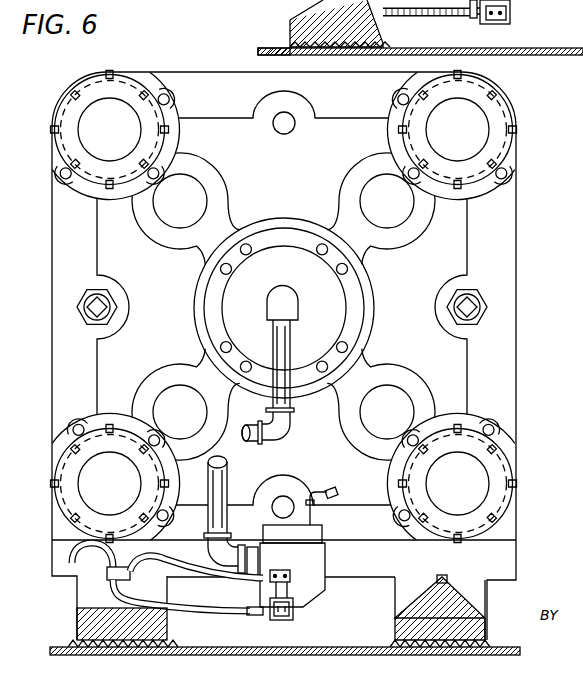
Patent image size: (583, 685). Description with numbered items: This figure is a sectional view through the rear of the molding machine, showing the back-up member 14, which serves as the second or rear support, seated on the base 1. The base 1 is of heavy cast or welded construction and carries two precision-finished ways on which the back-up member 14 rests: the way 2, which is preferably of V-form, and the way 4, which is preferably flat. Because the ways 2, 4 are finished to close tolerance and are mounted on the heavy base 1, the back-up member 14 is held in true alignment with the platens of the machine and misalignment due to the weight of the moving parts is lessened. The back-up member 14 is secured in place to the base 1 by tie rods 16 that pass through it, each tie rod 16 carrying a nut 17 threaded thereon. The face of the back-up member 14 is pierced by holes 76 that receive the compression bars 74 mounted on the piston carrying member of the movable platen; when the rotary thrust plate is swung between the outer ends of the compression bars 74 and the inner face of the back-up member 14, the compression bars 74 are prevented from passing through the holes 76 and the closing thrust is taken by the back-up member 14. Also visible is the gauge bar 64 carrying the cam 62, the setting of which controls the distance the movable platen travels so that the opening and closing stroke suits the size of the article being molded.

The base 1 is at (505, 654).
The way 2 is at (290, 40).
The way 4 is at (90, 625).
The back-up member 14 is at (518, 233).
The tie rod 16 is at (477, 135).
The nut 17 is at (503, 113).
The cam 62 is at (513, 9).
The gauge bar 64 is at (497, 23).
The compression bar 74 is at (167, 403).
The hole 76 is at (168, 387).